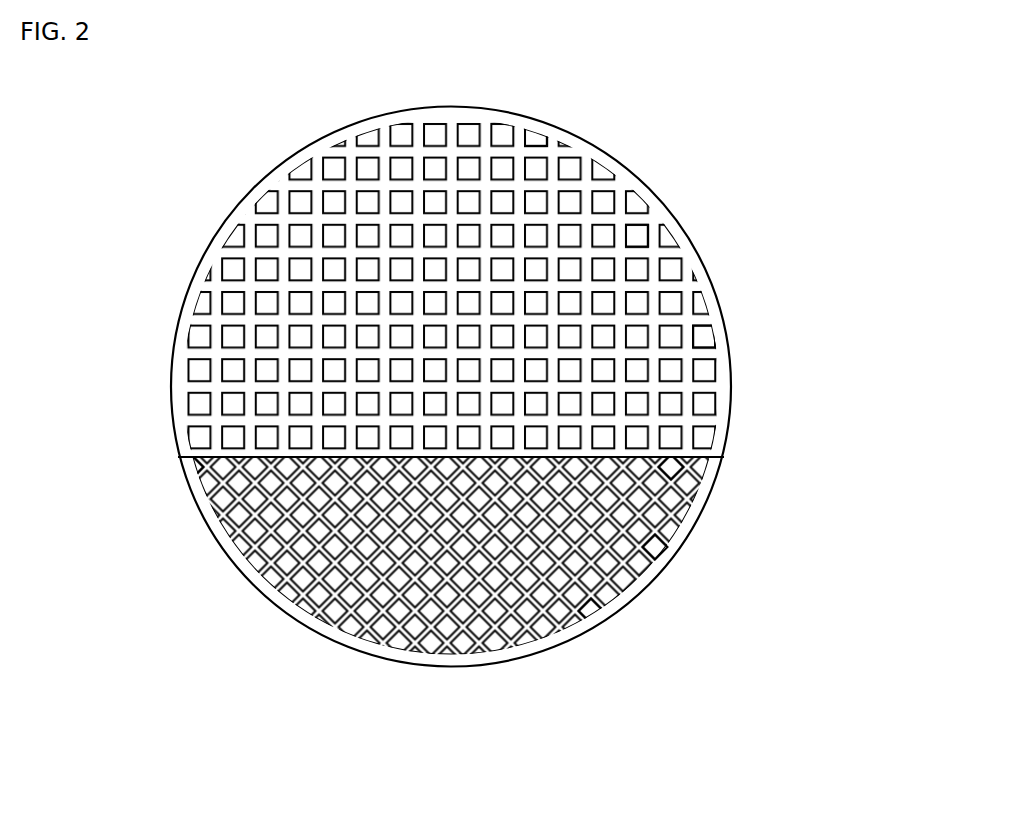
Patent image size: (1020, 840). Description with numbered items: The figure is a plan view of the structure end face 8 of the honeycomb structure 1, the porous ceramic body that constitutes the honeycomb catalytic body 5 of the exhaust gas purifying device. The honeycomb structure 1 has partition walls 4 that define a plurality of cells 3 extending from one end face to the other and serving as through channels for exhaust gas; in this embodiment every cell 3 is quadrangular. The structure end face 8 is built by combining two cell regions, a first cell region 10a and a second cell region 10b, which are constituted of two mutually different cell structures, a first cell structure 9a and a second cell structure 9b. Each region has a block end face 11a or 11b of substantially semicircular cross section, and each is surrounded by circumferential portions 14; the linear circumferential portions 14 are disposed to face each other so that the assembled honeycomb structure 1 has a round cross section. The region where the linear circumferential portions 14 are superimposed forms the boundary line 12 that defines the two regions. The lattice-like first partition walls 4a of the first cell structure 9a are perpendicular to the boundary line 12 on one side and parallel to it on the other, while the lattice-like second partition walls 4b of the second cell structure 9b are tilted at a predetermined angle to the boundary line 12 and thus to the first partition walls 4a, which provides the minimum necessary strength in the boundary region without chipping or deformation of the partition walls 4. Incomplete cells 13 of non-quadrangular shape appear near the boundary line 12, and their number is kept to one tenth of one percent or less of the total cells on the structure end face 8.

The honeycomb structure 1 is at (146, 168).
The honeycomb catalytic body 5 is at (441, 363).
The cells 3 is at (650, 238).
The partition walls 4 is at (688, 337).
The first partition walls 4a is at (765, 336).
The second partition walls 4b is at (657, 556).
The structure end face 8 is at (553, 150).
The first cell structure 9a is at (451, 287).
The second cell structure 9b is at (450, 555).
The first cell region 10a is at (177, 273).
The second cell region 10b is at (178, 556).
The block end face 11a is at (607, 111).
The block end face 11b is at (590, 613).
The boundary line 12 is at (692, 453).
The incomplete cells 13 is at (204, 469).
The circumferential portions 14 is at (641, 183).